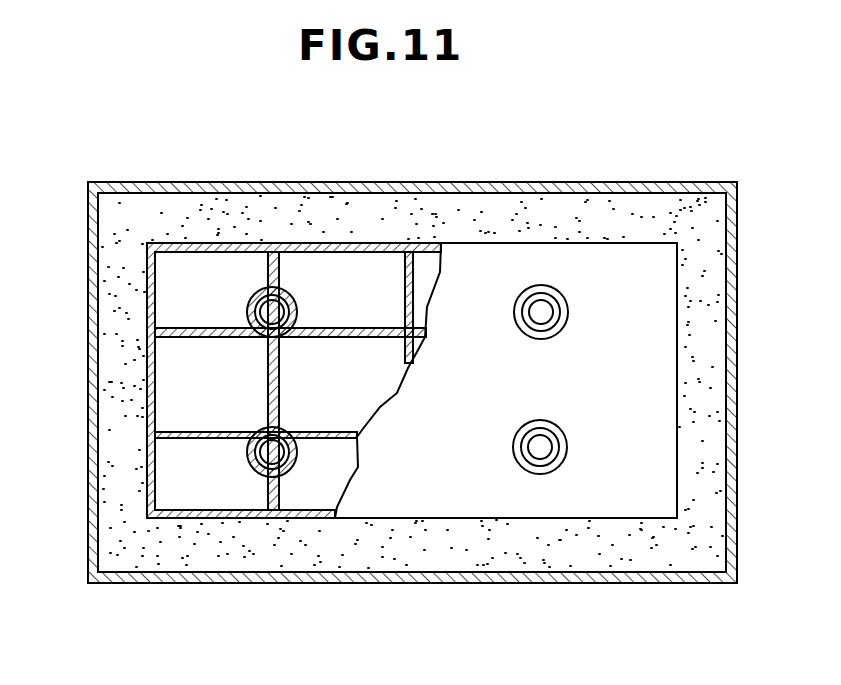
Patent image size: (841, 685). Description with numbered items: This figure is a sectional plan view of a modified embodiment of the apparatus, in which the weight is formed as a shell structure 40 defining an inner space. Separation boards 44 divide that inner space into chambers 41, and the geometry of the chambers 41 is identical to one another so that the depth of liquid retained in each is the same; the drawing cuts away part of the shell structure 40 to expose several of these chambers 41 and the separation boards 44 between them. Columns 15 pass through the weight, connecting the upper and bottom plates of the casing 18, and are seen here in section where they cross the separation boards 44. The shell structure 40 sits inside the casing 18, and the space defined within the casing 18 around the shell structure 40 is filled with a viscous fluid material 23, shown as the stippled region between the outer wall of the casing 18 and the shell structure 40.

The column 15 is at (254, 296).
The casing 18 is at (626, 184).
The viscous fluid material 23 is at (712, 376).
The shell structure 40 is at (503, 243).
The chamber 41 is at (178, 268).
The separation board 44 is at (279, 393).